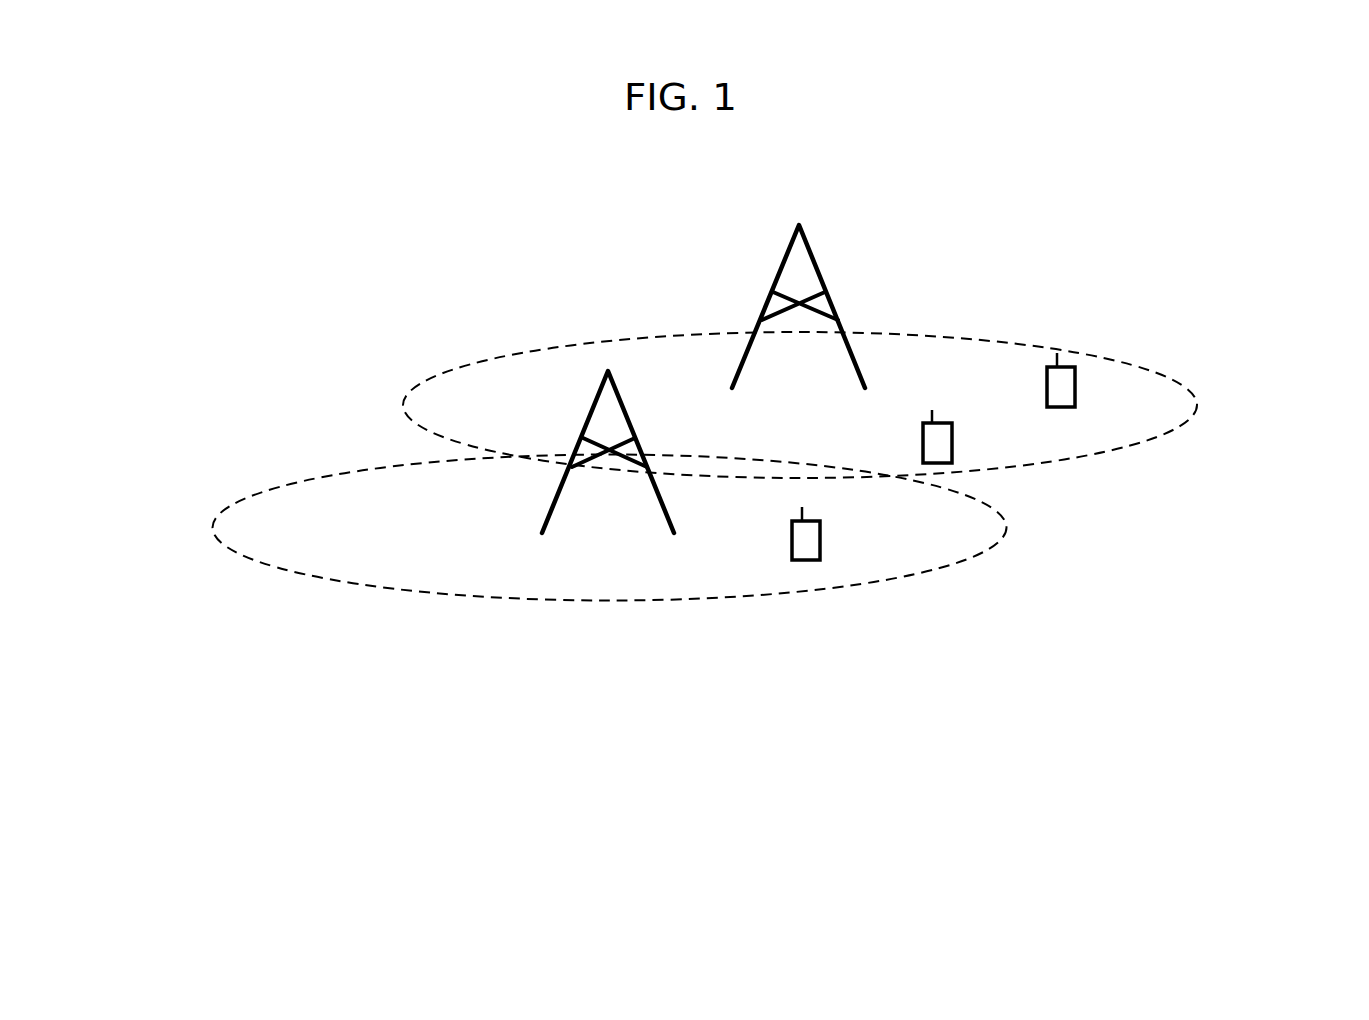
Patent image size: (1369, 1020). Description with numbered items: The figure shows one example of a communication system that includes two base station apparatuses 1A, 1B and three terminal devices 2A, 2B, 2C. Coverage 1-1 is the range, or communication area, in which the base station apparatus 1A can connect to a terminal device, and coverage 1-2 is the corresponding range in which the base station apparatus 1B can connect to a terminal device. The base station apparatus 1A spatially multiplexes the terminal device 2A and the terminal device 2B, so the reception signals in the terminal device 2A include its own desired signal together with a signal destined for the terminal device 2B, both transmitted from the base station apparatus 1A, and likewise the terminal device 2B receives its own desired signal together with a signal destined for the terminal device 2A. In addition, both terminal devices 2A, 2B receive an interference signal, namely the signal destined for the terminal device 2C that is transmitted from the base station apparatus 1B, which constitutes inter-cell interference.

The base station apparatus 1A is at (780, 267).
The base station apparatus 1B is at (590, 412).
The terminal device 2A is at (1075, 379).
The terminal device 2B is at (952, 435).
The terminal device 2C is at (820, 532).
The coverage 1-1 is at (503, 358).
The coverage 1-2 is at (295, 482).